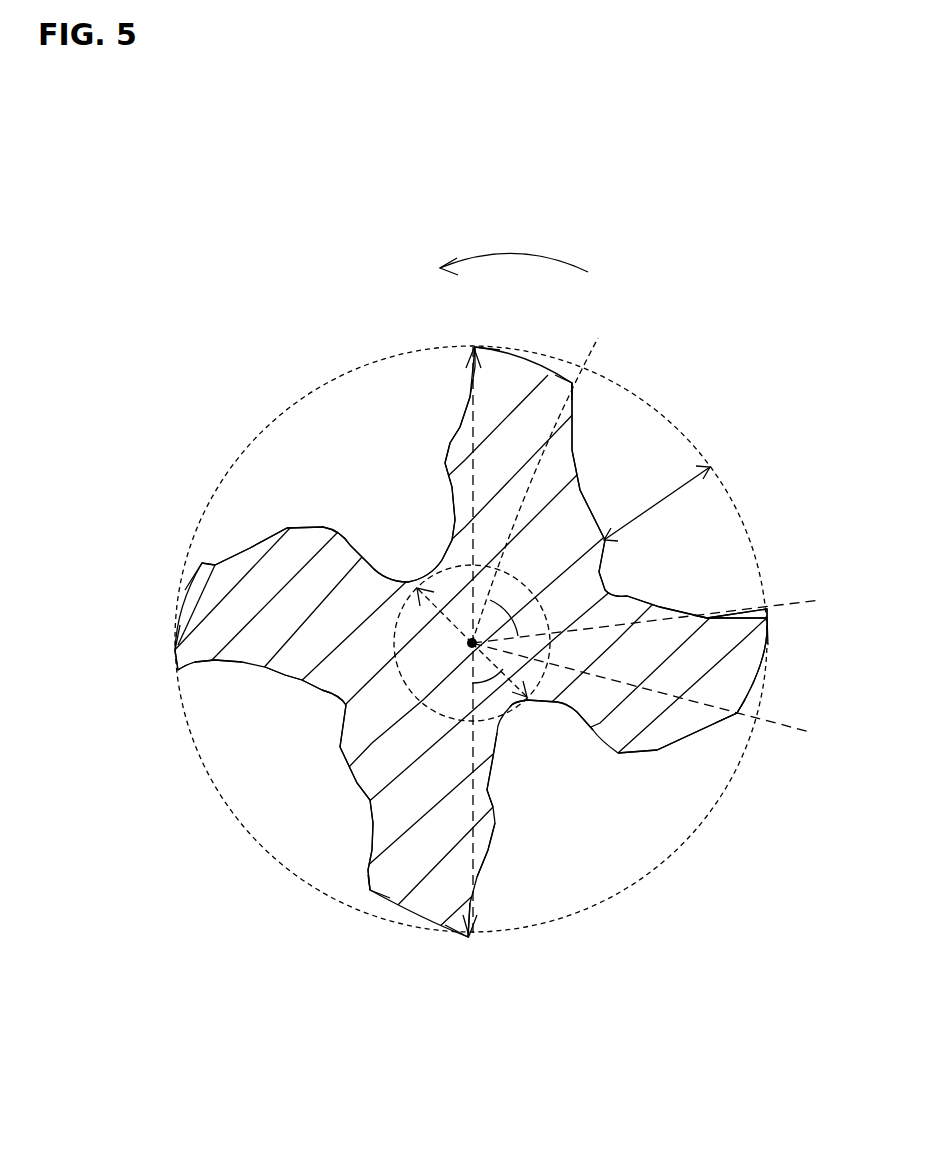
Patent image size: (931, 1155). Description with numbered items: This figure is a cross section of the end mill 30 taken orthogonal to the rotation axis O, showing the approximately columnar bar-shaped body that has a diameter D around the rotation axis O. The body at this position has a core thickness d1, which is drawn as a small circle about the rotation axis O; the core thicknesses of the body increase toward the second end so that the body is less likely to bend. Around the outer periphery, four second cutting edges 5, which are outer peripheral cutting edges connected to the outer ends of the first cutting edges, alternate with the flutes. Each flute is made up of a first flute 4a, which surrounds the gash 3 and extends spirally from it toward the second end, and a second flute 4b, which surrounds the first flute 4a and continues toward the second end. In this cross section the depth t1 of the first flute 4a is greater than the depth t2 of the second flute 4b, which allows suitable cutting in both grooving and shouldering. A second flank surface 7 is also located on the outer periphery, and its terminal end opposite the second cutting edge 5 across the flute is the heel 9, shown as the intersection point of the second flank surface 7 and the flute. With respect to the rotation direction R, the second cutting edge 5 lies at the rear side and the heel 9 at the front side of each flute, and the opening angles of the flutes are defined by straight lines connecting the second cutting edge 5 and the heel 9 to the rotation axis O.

The end mill 30 is at (333, 402).
The gash 3 is at (427, 573).
The first flute 4a is at (453, 444).
The second flute 4b is at (469, 390).
The second cutting edge 5 is at (476, 346).
The second flank surface 7 is at (762, 664).
The heel 9 is at (574, 382).
The diameter D is at (463, 641).
The rotation axis O is at (452, 642).
The core thickness d1 is at (472, 643).
The depth of the first flute t1 is at (657, 503).
The depth of the second flute t2 is at (737, 598).
The rotation direction R is at (514, 252).